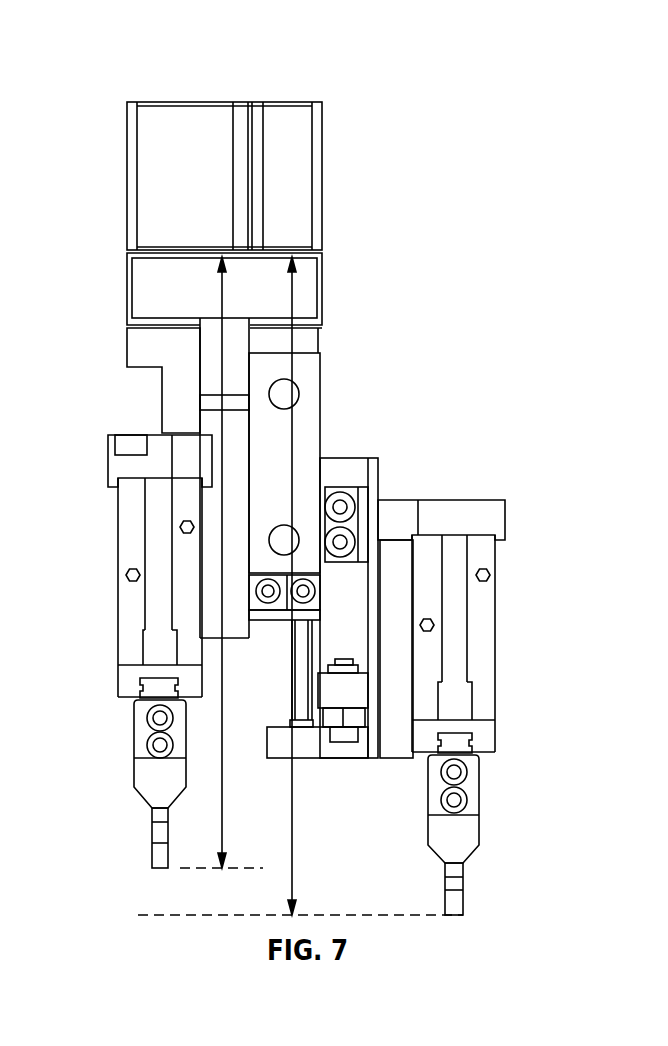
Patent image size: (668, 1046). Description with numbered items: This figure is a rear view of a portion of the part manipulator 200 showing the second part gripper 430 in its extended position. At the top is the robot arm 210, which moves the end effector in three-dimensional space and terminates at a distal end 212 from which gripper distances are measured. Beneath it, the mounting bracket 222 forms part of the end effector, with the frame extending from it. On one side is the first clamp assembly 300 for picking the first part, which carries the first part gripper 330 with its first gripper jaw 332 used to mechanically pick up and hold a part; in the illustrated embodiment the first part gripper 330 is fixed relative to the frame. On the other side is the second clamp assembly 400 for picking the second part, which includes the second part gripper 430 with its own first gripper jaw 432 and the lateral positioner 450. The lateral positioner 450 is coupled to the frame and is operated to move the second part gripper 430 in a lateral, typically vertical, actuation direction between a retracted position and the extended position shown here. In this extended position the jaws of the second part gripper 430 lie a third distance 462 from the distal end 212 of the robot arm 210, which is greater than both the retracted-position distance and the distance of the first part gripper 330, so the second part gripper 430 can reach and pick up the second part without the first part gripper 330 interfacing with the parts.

The part manipulator 200 is at (321, 477).
The robot arm 210 is at (317, 157).
The distal end of the robot arm 212 is at (293, 255).
The mounting bracket 222 is at (232, 475).
The lateral positioner 450 is at (362, 434).
The third distance 462 is at (300, 410).
The first clamp assembly 300 is at (116, 654).
The first part gripper 330 is at (124, 728).
The first gripper jaw 332 is at (157, 793).
The second clamp assembly 400 is at (504, 707).
The second part gripper 430 is at (507, 835).
The first gripper jaw 432 is at (470, 837).